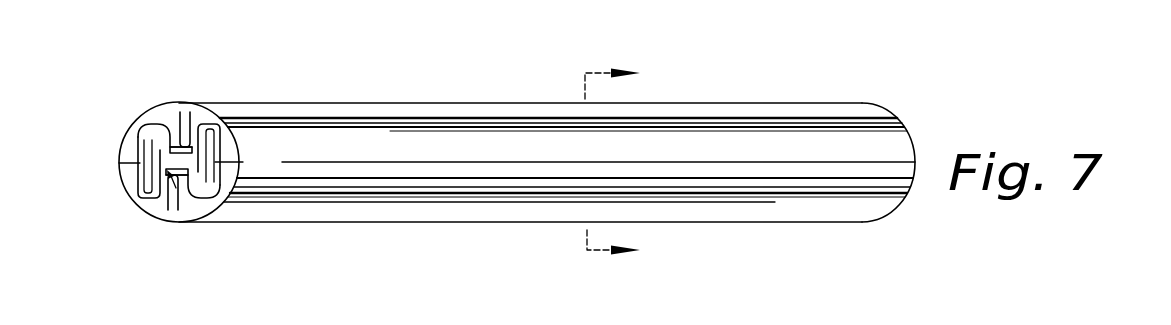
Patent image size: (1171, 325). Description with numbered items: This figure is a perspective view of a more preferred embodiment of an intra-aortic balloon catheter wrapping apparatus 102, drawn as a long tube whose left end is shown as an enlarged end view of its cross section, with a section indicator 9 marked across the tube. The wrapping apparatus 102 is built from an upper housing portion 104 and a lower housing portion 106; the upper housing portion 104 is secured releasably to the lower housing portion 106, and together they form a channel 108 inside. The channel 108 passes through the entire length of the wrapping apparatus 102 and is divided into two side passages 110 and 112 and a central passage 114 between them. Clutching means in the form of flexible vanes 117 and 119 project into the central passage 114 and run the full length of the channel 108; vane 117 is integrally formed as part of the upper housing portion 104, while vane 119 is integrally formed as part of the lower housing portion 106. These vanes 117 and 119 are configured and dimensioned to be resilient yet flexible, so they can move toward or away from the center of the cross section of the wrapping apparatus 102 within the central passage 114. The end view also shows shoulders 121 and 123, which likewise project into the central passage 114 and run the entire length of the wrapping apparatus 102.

The wrapping apparatus 102 is at (481, 98).
The upper housing portion 104 is at (725, 135).
The lower housing portion 106 is at (376, 213).
The central passage 114 is at (517, 161).
The flexible vane 119 is at (162, 158).
The shoulder 121 is at (175, 128).
The flexible vane 117 is at (190, 133).
The side passage 112 is at (213, 143).
The side passage 110 is at (138, 192).
The channel 108 is at (167, 206).
The shoulder 123 is at (184, 202).
The section line 9- 9 is at (622, 164).